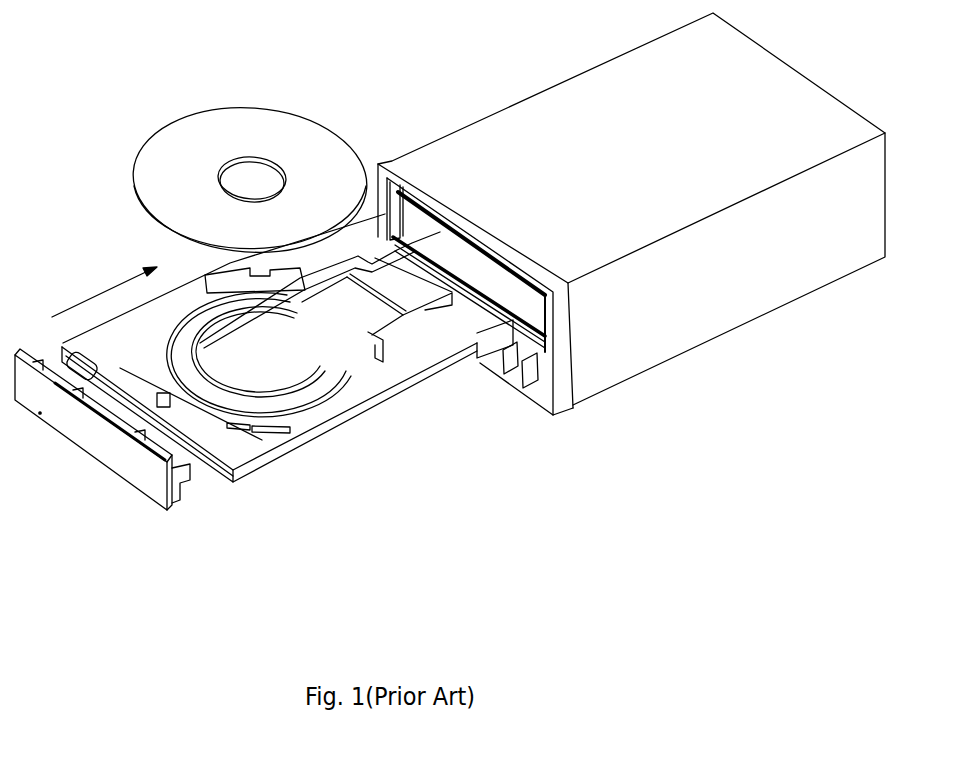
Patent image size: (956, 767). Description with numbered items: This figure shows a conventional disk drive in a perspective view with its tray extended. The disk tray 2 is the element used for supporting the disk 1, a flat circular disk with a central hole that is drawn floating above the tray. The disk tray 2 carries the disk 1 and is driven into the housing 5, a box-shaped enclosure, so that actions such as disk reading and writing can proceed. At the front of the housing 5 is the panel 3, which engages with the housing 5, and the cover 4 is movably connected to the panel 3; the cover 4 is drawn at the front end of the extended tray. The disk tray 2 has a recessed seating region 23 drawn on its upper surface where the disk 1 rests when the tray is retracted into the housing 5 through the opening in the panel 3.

The disk 1 is at (168, 156).
The disk tray 2 is at (338, 402).
The disc seating recess of tray 23 is at (280, 383).
The panel 3 is at (562, 375).
The cover 4 is at (82, 430).
The housing 5 is at (638, 68).